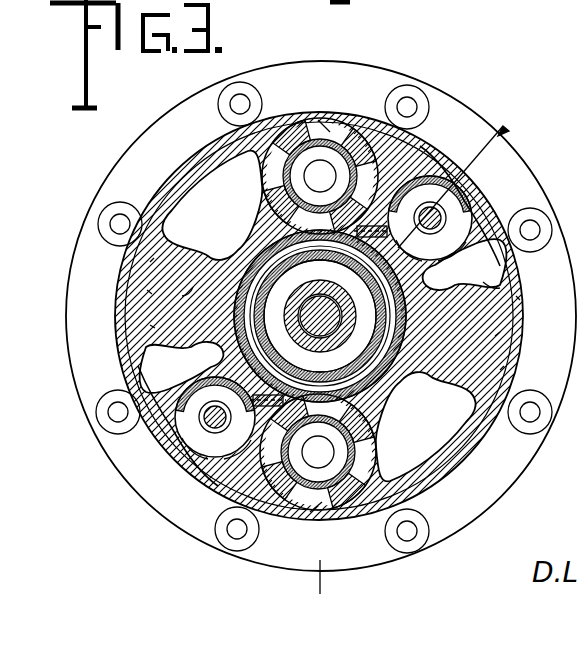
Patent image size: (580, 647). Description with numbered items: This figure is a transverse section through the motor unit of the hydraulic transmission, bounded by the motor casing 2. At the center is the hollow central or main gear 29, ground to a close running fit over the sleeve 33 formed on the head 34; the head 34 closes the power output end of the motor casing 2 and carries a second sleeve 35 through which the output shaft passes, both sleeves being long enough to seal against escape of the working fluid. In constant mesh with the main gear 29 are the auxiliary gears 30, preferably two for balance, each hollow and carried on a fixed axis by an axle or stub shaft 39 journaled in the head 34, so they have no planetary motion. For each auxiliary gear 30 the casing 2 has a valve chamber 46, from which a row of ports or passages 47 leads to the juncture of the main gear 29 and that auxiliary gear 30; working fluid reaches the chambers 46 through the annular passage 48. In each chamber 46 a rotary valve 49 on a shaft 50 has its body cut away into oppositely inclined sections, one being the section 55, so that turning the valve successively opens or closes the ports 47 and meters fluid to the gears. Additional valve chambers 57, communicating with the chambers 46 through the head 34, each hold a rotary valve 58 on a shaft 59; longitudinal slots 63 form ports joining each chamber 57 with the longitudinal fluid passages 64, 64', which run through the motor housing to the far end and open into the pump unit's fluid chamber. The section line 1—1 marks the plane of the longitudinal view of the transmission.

The section line 1- 1 is at (420, 369).
The motor casing 2 is at (343, 122).
The central or main gear 29 is at (273, 236).
The auxiliary gears 30 is at (290, 178).
The sleeve 33 is at (336, 286).
The head 34 is at (340, 312).
The sleeve 35 is at (342, 344).
The axle or stub shaft 39 is at (322, 135).
The valve chamber 46 is at (474, 224).
The ports or passages 47 is at (400, 235).
The annular passage 48 is at (362, 356).
The rotary valve 49 is at (472, 197).
The shaft 50 is at (440, 196).
The inclined section 55 is at (420, 166).
The valve chamber 57 is at (495, 335).
The rotary valve 58 is at (516, 296).
The shaft 59 is at (487, 283).
The longitudinal slots 63 is at (500, 370).
The longitudinal fluid passages 64 is at (318, 316).
The cavity 64' is at (327, 316).